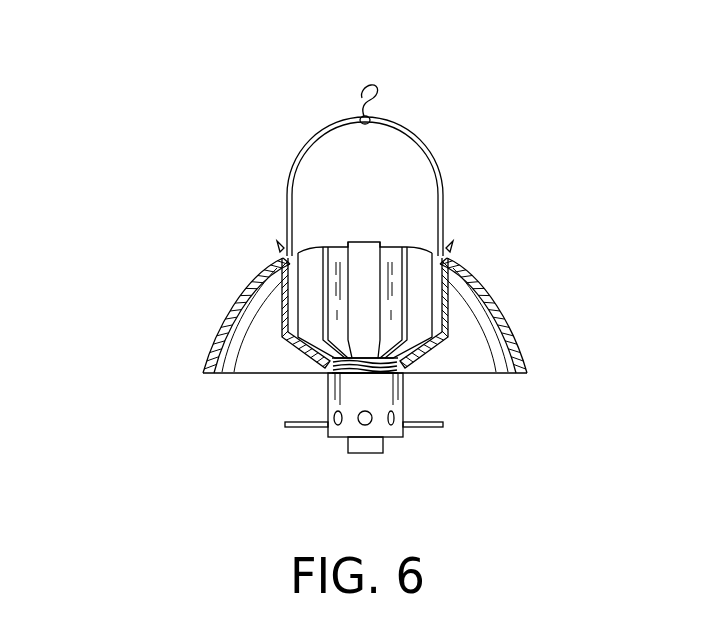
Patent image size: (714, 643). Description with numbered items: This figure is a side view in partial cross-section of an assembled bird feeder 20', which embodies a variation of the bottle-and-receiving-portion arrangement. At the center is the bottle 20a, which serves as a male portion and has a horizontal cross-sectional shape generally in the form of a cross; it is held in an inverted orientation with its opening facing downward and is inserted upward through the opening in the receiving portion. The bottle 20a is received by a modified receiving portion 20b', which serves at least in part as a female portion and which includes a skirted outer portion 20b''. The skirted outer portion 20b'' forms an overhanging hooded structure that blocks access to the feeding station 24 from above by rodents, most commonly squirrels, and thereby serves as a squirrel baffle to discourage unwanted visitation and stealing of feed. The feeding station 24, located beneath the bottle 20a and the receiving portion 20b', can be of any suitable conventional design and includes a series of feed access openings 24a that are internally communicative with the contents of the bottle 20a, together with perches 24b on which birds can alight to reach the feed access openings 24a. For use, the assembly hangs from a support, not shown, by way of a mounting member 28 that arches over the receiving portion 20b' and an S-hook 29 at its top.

The bird feeder 20' is at (317, 299).
The mounting member 28 is at (303, 148).
The S-hook 29 is at (383, 103).
The bottle 20a is at (413, 255).
The skirted outer portion 20b'' is at (320, 315).
The modified receiving portion 20b' is at (362, 367).
The feeding station 24 is at (420, 395).
The feed access openings 24a is at (364, 424).
The perches 24b is at (415, 428).